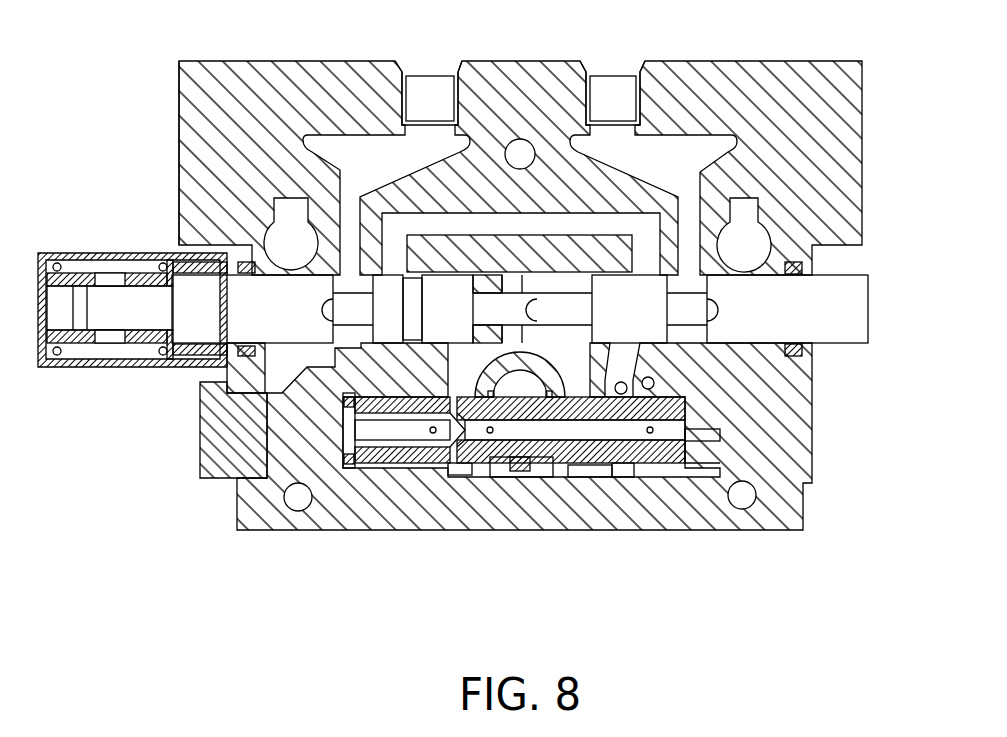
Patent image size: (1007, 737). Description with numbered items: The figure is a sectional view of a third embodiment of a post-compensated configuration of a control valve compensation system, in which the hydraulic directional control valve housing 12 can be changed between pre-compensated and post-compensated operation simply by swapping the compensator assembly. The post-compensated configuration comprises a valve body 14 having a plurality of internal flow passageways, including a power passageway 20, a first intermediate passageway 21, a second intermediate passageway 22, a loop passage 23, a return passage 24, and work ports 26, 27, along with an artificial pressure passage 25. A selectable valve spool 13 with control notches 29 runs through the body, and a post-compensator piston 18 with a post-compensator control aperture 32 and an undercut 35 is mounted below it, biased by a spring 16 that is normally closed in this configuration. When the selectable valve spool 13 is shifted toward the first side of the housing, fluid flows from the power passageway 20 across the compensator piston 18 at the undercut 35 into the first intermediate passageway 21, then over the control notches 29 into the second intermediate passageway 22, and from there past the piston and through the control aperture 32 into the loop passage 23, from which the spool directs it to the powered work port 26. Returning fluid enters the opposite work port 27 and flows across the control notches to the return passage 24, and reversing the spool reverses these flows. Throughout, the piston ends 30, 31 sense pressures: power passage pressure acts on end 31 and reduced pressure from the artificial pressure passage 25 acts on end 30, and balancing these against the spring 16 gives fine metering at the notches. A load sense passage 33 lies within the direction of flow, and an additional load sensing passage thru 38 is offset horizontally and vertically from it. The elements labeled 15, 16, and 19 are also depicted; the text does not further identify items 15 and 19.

The hydraulic directional control valve housing 12 is at (333, 90).
The selectable valve spool 13 is at (868, 302).
The valve body 14 is at (179, 228).
The end block 15 is at (200, 432).
The spring 16 is at (240, 492).
The post-compensator piston 18 is at (665, 472).
The actuator 19 is at (40, 367).
The power passageway 20 is at (523, 474).
The first intermediate passageway 21 is at (448, 474).
The second intermediate passageway 22 is at (580, 470).
The loop passage 23 is at (660, 218).
The return passage 24 is at (398, 258).
The artificial pressure passage 25 is at (457, 463).
The work port 26 is at (428, 60).
The work port 27 is at (612, 60).
The control notches 29 is at (497, 298).
The compensator piston end 30 is at (358, 455).
The compensator piston end 31 is at (687, 452).
The post-compensator control aperture 32 is at (622, 467).
The load sense passage 33 is at (687, 418).
The undercut 35 is at (485, 470).
The load sensing passage thru 38 is at (656, 378).